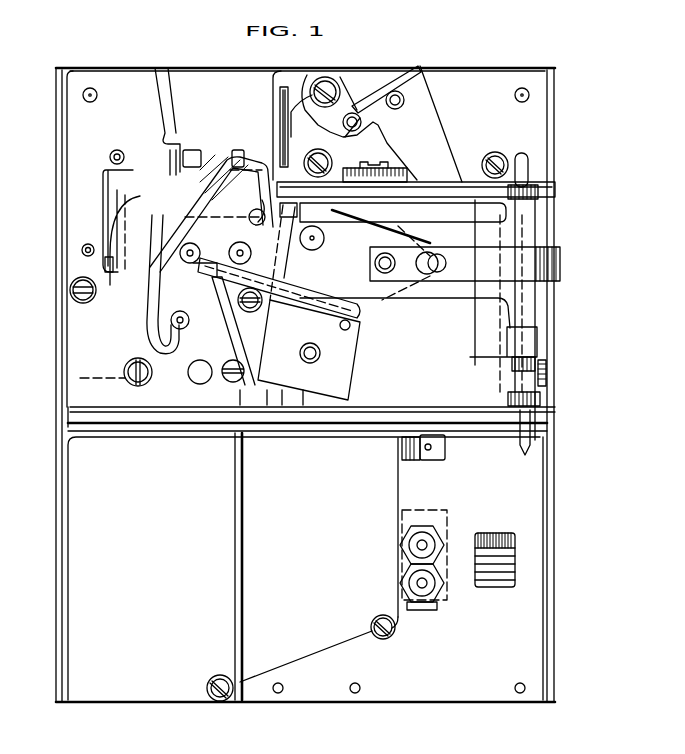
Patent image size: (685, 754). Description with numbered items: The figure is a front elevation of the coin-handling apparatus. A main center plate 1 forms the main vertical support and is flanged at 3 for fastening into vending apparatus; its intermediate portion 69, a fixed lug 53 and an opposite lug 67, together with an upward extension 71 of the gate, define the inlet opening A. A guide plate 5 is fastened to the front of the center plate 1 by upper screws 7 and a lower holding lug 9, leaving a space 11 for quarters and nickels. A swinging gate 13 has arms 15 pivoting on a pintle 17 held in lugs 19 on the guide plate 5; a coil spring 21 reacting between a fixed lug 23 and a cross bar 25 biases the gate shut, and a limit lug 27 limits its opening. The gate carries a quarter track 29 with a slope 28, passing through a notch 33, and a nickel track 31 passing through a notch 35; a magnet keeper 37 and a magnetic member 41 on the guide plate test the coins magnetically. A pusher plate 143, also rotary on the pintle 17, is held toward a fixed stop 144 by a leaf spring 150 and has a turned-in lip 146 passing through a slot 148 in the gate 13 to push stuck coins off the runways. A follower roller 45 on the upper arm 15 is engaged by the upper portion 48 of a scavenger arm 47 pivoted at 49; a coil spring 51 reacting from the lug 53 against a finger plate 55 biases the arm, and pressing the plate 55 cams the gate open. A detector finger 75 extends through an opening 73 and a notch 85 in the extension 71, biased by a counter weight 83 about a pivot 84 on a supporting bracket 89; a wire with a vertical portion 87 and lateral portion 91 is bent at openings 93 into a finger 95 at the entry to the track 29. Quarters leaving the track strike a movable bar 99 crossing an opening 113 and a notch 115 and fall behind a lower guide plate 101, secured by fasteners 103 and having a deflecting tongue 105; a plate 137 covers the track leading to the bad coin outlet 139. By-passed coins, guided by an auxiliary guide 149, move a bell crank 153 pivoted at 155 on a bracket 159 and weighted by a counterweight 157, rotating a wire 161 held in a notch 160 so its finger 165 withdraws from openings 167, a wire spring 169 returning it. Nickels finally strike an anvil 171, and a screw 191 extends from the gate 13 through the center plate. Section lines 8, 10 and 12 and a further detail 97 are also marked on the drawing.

The main center plate 1 is at (471, 76).
The flange 3 is at (58, 68).
The guide plate 5 is at (430, 354).
The upper screws 7 is at (318, 150).
The section line 8 is at (186, 48).
The lower holding lug 9 is at (200, 280).
The section line 10 is at (568, 144).
The space 11 is at (472, 731).
The section line 12 is at (372, 731).
The swinging gate 13 is at (80, 357).
The arms 15 is at (422, 196).
The pintle 17 is at (528, 453).
The lugs 19 is at (540, 199).
The coil spring 21 is at (533, 357).
The fixed lug 23 is at (546, 366).
The cross bar 25 is at (478, 386).
The limit lug 27 is at (105, 262).
The slope 28 is at (211, 214).
The supporting track 29 is at (306, 250).
The supporting track 31 is at (258, 402).
The notch 33 is at (362, 315).
The notch 35 is at (300, 405).
The magnet keeper 37 is at (377, 216).
The magnetic member 41 is at (346, 392).
The follower roller 45 is at (399, 172).
The scavenger arm 47 is at (432, 127).
The upper portion 48 is at (418, 184).
The pivot 49 is at (326, 78).
The coil spring 51 is at (293, 108).
The fixed lug 53 is at (283, 86).
The finger plate 55 is at (383, 94).
The lug 67 is at (158, 78).
The intermediate portion 69 is at (206, 68).
The upward extension 71 is at (182, 109).
The opening 73 is at (177, 177).
The detector finger 75 is at (220, 157).
The counter weight 83 is at (250, 253).
The pivot 84 is at (166, 258).
The notch 85 is at (184, 152).
The vertical portion 87 is at (160, 160).
The supporting bracket 89 is at (110, 219).
The lower lateral portion 91 is at (216, 208).
The openings 93 is at (262, 203).
The finger 95 is at (256, 216).
The bracket 97 is at (180, 173).
The movable bar 99 is at (420, 460).
The lower guide plate 101 is at (530, 680).
The fasteners 103 is at (384, 640).
The deflecting tongue 105 is at (504, 585).
The opening 113 is at (429, 436).
The notch 115 is at (441, 461).
The plate 137 is at (158, 702).
The bad coin outlet 139 is at (105, 702).
The pusher plate 143 is at (449, 297).
The fixed stop 144 is at (298, 210).
The turned-in lip 146 is at (170, 324).
The slot 148 is at (238, 157).
The auxiliary guide 149 is at (104, 203).
The leaf spring 150 is at (462, 254).
The bell crank 153 is at (173, 392).
The pivot 155 is at (214, 402).
The counterweight 157 is at (123, 402).
The bracket 159 is at (263, 329).
The notch 160 is at (260, 303).
The wire 161 is at (300, 355).
The finger portion 165 is at (150, 317).
The openings 167 is at (158, 310).
The wire spring 169 is at (340, 330).
The anvil 171 is at (398, 502).
The screw 191 is at (72, 301).
The inlet opening A is at (197, 66).